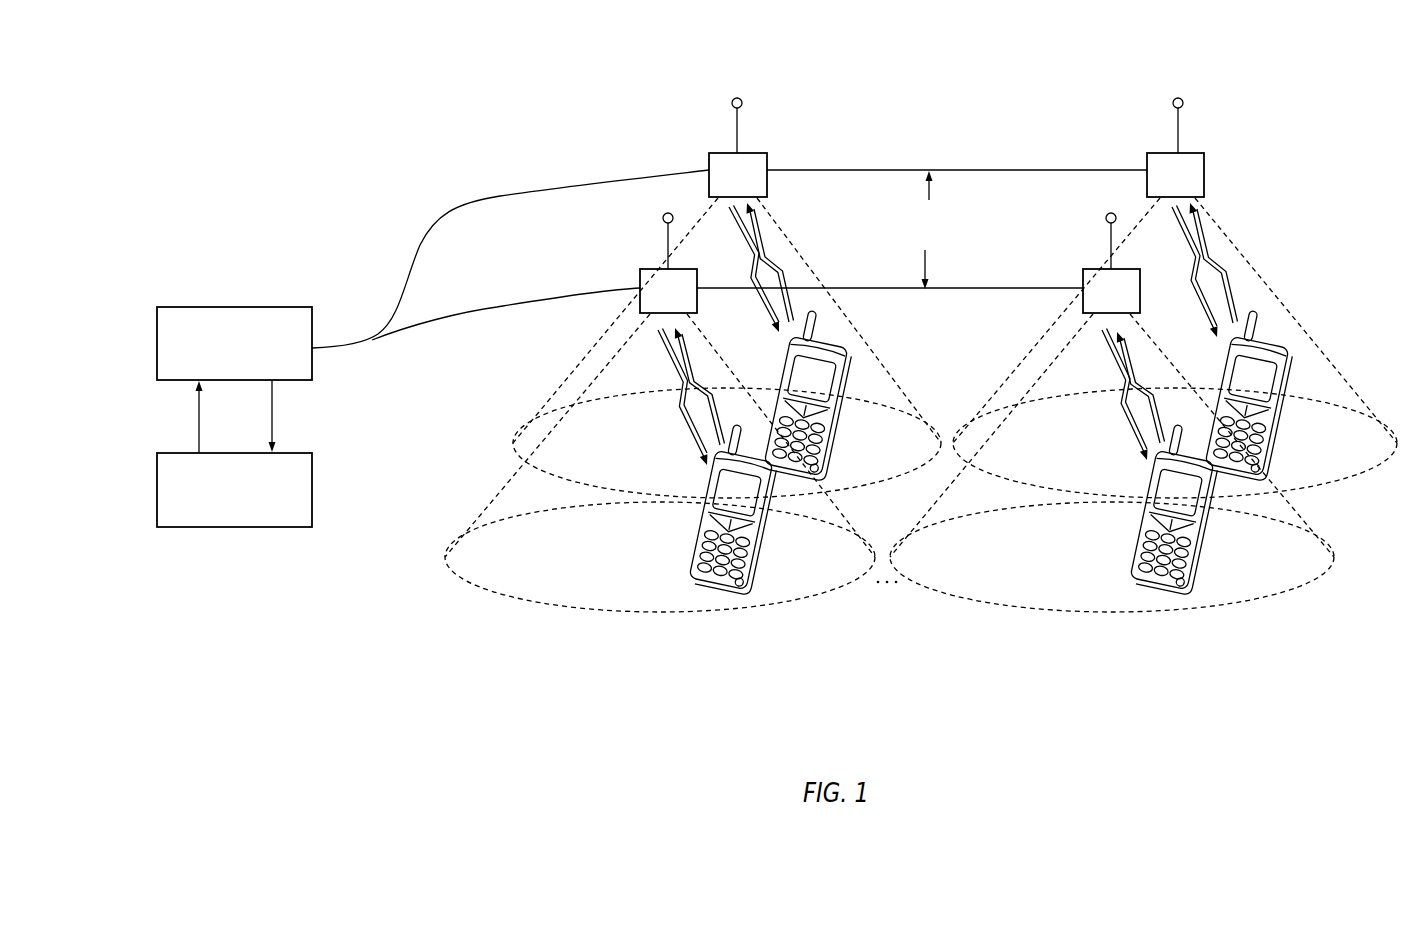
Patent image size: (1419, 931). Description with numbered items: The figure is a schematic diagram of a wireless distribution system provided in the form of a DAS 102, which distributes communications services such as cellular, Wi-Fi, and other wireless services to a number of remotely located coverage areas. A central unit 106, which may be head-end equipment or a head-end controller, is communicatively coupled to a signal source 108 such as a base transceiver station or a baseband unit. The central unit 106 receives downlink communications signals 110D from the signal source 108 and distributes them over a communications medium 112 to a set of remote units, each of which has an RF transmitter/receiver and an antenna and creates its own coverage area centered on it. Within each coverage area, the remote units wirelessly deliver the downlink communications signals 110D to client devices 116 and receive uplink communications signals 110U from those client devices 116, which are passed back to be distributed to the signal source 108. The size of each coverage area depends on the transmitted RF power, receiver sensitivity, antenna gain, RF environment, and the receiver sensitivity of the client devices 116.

The distributed antenna system 102 is at (889, 119).
The central unit 106 is at (249, 359).
The signal source 108 is at (249, 505).
The downlink communications signals 110D is at (199, 408).
The uplink communications signals 110U is at (272, 428).
The communications medium 112 is at (531, 192).
The client devices 116 is at (852, 372).